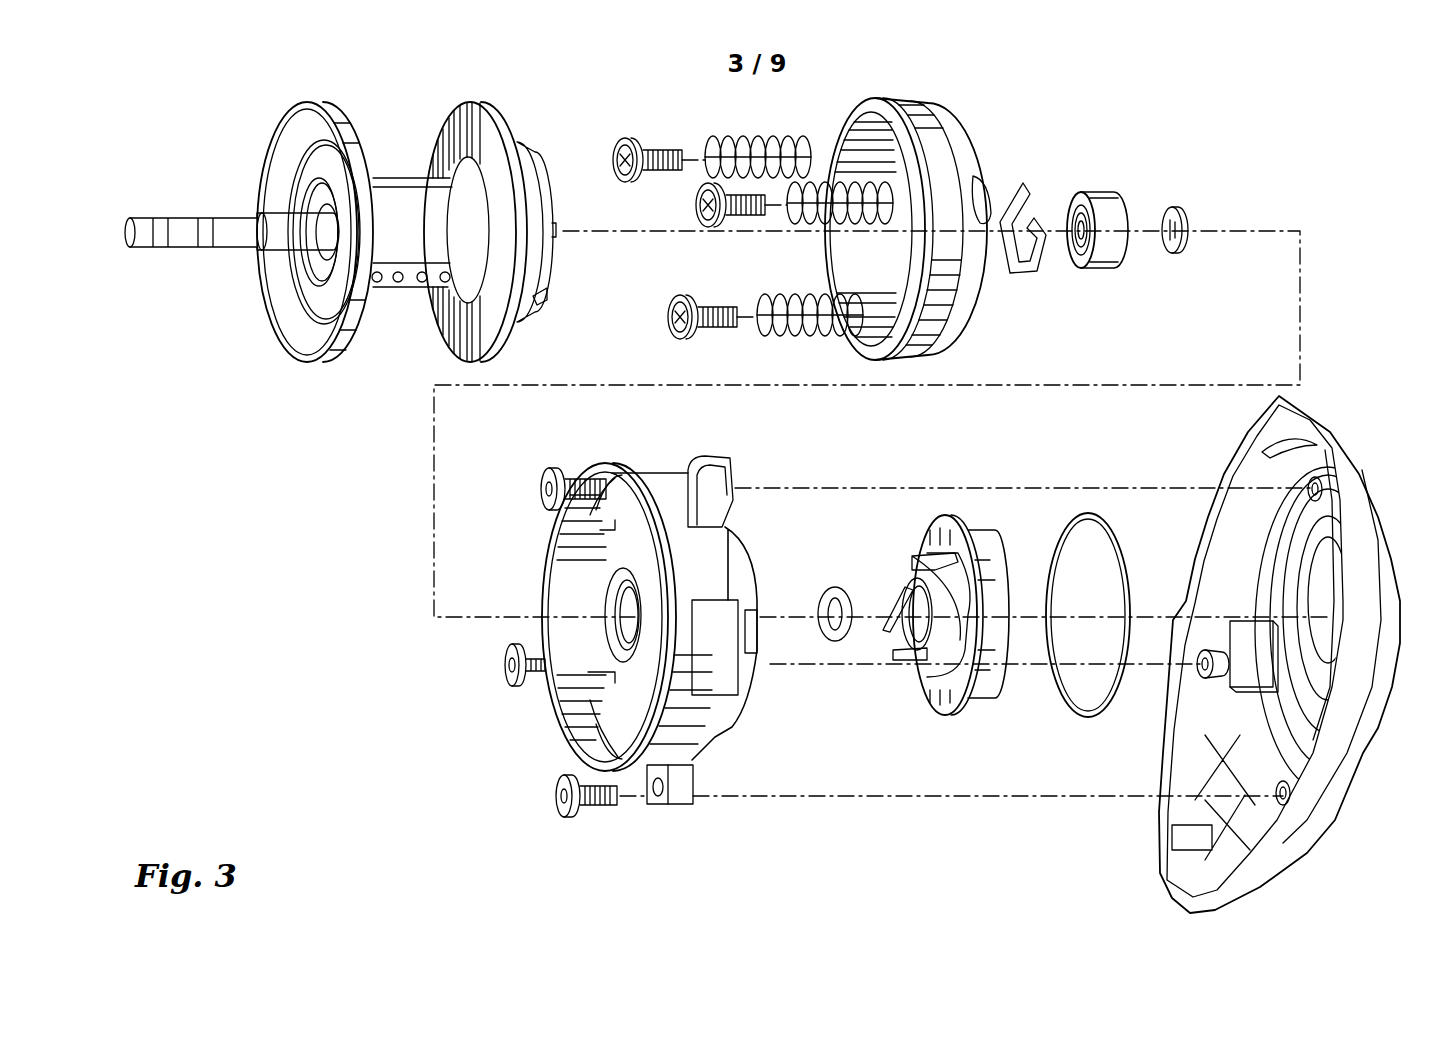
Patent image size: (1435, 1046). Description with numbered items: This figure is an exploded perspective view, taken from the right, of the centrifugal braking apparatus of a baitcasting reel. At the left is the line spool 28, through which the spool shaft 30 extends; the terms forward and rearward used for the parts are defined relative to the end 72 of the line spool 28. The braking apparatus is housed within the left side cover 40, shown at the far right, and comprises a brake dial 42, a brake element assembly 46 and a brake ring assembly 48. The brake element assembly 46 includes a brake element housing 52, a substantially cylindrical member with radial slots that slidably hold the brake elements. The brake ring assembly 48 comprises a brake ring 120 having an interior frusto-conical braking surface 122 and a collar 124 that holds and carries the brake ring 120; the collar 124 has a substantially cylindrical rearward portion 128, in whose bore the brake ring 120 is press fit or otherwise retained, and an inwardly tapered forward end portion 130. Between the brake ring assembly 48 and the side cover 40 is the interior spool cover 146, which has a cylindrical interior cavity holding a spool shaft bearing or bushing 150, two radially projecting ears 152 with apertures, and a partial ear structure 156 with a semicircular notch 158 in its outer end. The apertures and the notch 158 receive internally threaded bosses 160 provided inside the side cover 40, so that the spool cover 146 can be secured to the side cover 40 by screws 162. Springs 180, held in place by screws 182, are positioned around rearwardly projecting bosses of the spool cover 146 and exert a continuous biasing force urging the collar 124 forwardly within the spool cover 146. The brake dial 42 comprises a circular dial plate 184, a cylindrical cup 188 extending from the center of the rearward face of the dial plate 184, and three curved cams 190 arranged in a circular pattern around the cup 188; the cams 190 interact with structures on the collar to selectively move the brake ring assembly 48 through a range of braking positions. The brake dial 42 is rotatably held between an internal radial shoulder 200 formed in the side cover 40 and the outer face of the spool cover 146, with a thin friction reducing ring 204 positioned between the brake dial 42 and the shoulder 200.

The line spool 28 is at (340, 107).
The spool shaft 30 is at (157, 222).
The left side cover 40 is at (1261, 654).
The brake dial 42 is at (909, 612).
The brake element assembly 46 is at (522, 118).
The brake ring assembly 48 is at (933, 220).
The brake element housing 52 is at (535, 300).
The end of line spool 72 is at (470, 100).
The brake ring 120 is at (872, 350).
The interior frusto-conical braking surface 122 is at (858, 142).
The collar 124 is at (982, 290).
The cylindrical rearward portion 128 is at (948, 346).
The inwardly tapered forward longitudinal end portion 130 is at (968, 150).
The interior spool cover 146 is at (665, 638).
The spool shaft bearing or bushing 150 is at (1104, 200).
The radially projecting ears 152 is at (732, 462).
The partial ear structure 156 is at (682, 800).
The semicircular notch 158 is at (660, 802).
The internally-threaded bosses 160 is at (1325, 490).
The bolts or screws 162 is at (540, 470).
The biasing members 180 is at (710, 138).
The bolts or screws 182 is at (620, 138).
The circular dial plate 184 is at (955, 520).
The cylindrical cup 188 is at (905, 622).
The curved cams 190 is at (915, 556).
The internal radial shoulder 200 is at (1305, 582).
The friction reducing ring 204 is at (1085, 512).